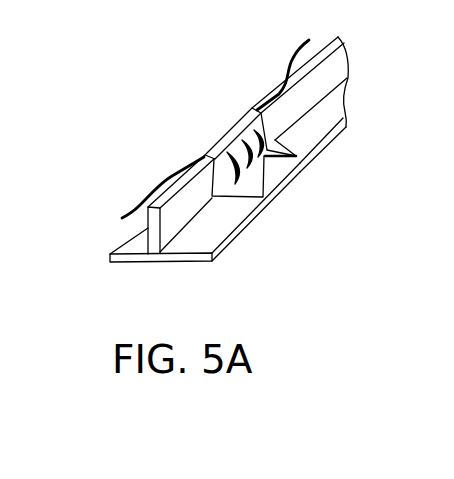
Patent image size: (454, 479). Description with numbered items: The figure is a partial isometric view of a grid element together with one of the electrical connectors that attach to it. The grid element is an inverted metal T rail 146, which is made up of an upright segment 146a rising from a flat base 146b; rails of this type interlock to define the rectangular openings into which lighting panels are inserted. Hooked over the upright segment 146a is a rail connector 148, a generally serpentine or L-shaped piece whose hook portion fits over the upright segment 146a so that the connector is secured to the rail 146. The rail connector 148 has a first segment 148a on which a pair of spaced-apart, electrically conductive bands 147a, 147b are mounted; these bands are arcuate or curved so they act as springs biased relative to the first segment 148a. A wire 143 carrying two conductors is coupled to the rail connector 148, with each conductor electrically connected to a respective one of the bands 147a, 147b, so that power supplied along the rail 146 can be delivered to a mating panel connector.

The wire 143 is at (171, 170).
The rail 146 is at (127, 264).
The upright segment 146a is at (148, 246).
The base 146b is at (347, 130).
The electrically conductive band 147a is at (235, 180).
The electrically conductive band 147b is at (262, 158).
The rail connector 148 is at (234, 200).
The first segment 148a is at (270, 136).